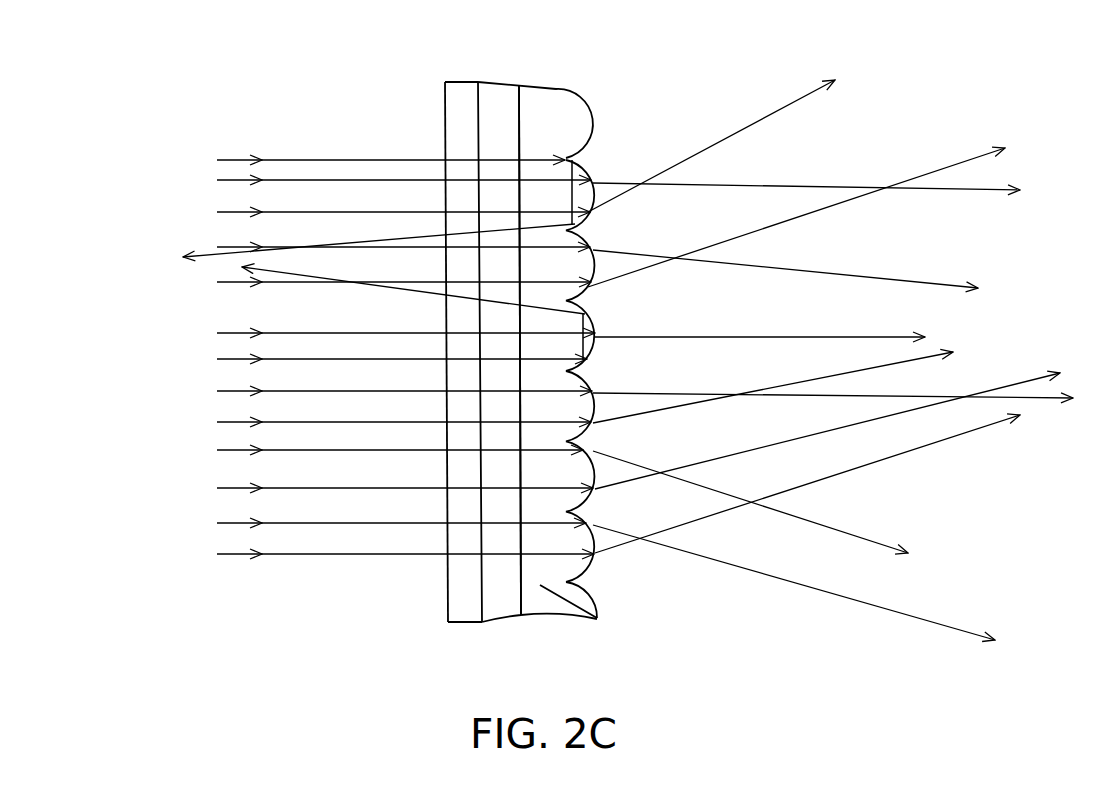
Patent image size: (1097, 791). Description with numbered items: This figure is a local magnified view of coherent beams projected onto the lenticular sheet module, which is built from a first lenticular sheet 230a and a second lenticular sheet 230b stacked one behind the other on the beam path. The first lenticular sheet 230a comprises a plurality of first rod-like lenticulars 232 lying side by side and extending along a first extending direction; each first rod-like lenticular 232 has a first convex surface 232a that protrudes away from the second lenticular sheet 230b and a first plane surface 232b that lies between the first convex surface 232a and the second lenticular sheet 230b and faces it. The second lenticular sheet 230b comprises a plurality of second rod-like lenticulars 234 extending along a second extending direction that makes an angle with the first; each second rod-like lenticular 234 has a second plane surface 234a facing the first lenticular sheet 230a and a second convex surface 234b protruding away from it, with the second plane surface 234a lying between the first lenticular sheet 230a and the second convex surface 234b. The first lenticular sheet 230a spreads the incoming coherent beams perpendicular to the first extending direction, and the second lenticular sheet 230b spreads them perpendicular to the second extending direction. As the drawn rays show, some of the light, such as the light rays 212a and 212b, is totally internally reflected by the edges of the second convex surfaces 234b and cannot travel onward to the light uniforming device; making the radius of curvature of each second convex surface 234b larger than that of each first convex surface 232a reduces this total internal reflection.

The light ray 212a is at (328, 158).
The light ray 212b is at (300, 360).
The first rod-like lenticular 232 is at (455, 110).
The first convex surface 232a is at (447, 581).
The first plane surface 232b is at (523, 585).
The second rod-like lenticular 234 is at (550, 110).
The second plane surface 234a is at (517, 120).
The second convex surface 234b is at (588, 103).
The first lenticular sheet 230a is at (503, 602).
The second lenticular sheet 230b is at (600, 605).